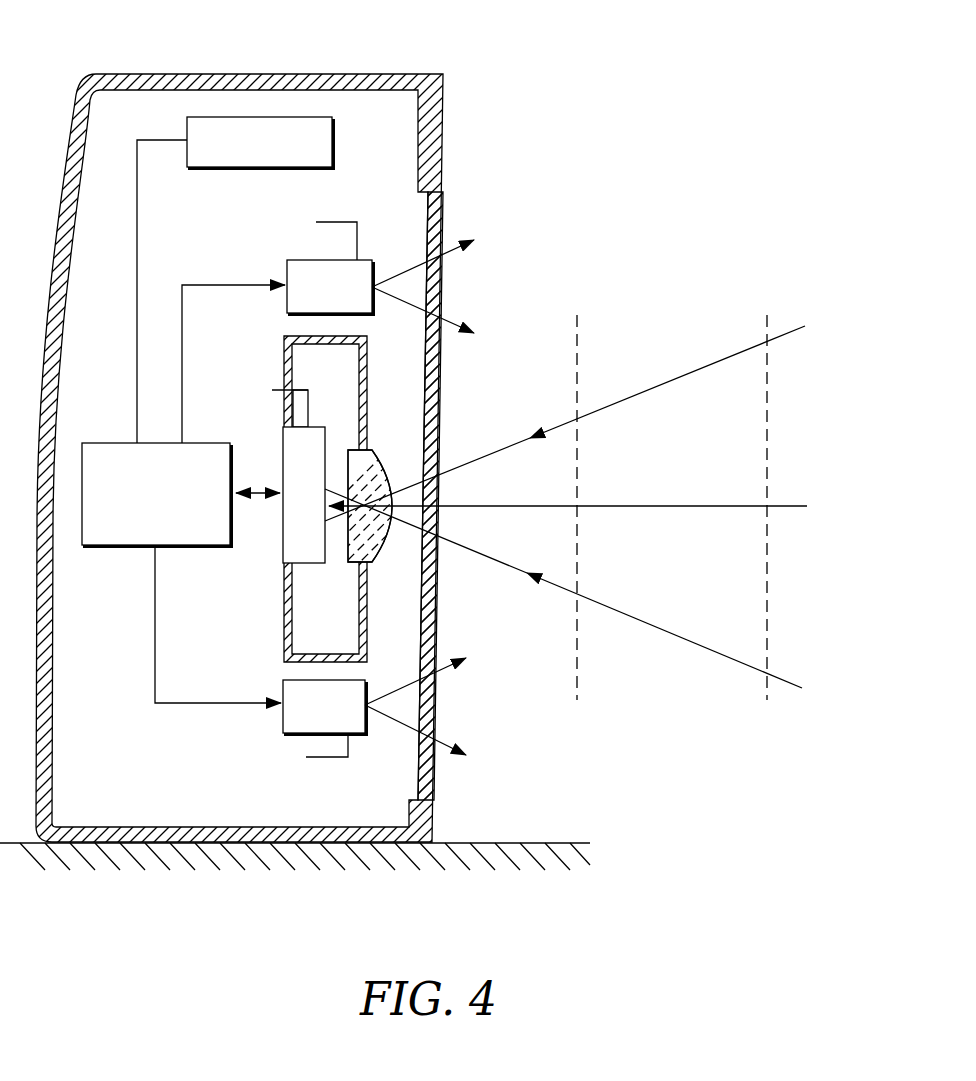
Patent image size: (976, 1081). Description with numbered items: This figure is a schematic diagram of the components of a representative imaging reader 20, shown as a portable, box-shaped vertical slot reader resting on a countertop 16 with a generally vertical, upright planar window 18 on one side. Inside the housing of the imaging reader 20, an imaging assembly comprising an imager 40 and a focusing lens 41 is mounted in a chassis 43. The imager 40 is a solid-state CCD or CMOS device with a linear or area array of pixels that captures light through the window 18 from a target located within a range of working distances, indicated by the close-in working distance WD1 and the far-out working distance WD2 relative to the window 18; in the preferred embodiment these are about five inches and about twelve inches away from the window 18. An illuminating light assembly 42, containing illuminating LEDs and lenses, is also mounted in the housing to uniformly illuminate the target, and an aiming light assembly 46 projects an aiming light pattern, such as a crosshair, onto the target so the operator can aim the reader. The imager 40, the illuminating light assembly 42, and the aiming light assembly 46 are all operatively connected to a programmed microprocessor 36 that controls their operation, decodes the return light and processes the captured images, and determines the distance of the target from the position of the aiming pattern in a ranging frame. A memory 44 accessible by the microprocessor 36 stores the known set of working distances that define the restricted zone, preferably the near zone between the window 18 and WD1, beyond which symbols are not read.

The imaging reader 20 is at (442, 72).
The window 18 is at (443, 193).
The countertop 16 is at (536, 843).
The memory 44 is at (332, 143).
The illuminating light assembly 42 is at (287, 298).
The chassis 43 is at (367, 368).
The imager 40 is at (283, 529).
The focusing lens 41 is at (386, 477).
The microprocessor 36 is at (155, 443).
The aiming light assembly 46 is at (283, 686).
The close-in working distance WD1 is at (598, 309).
The far-out working distance WD2 is at (788, 309).